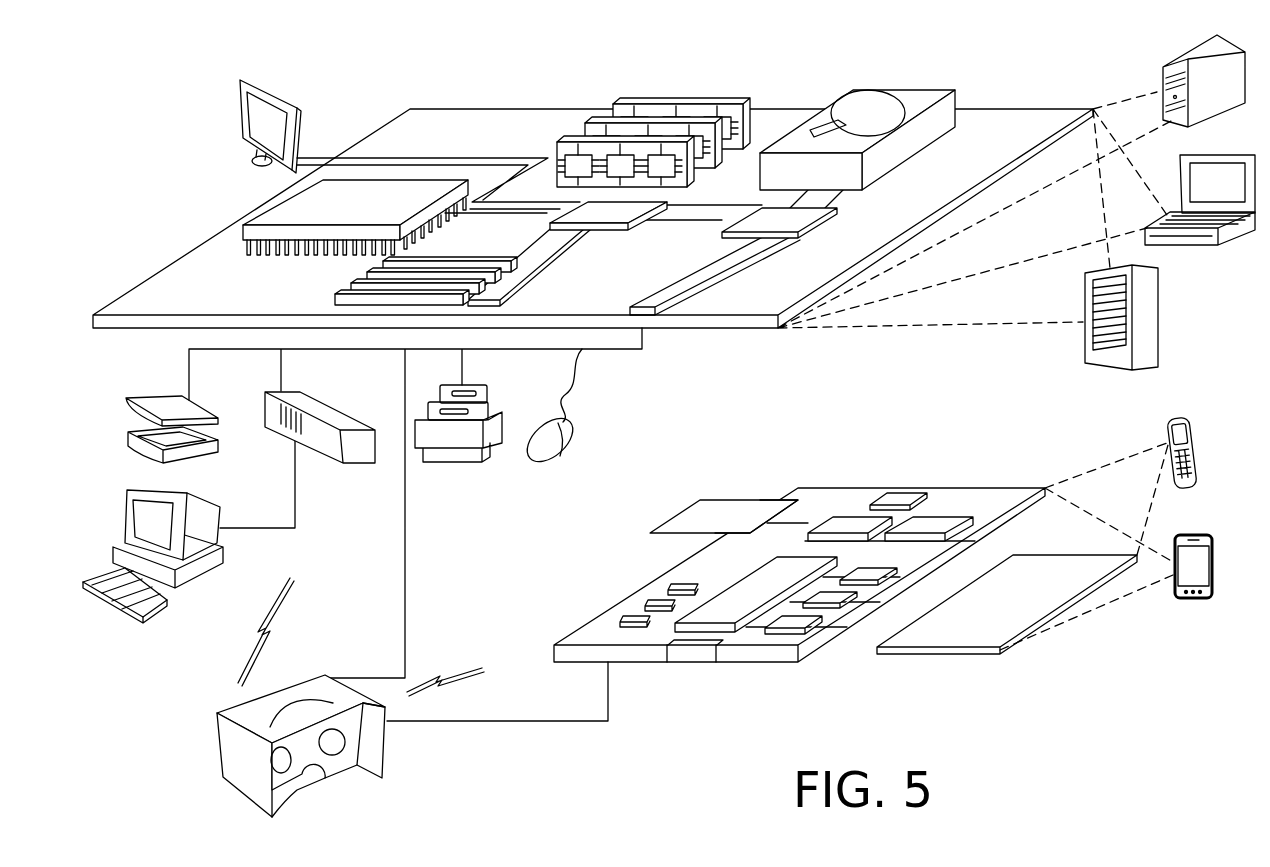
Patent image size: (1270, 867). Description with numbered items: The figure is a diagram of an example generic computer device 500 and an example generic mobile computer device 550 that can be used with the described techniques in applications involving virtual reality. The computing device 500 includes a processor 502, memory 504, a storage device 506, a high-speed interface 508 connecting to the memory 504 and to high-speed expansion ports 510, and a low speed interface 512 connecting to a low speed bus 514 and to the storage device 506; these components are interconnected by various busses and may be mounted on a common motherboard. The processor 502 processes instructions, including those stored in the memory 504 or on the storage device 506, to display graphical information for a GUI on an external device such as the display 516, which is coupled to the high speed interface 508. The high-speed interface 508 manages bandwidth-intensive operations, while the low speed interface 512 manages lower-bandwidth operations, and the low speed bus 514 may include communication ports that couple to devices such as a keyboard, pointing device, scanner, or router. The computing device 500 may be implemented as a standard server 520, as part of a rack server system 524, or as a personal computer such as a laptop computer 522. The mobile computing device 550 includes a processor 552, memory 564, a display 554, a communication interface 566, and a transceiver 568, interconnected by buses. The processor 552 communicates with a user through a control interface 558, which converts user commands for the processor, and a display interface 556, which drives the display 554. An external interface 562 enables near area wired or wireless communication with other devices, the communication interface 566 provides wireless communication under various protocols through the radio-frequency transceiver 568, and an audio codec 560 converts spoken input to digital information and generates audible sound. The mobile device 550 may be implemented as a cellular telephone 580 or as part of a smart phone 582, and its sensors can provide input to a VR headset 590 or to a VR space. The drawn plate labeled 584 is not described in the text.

The generic computer device 500 is at (364, 56).
The processor 502 is at (266, 207).
The memory 504 is at (683, 103).
The storage device 506 is at (896, 88).
The high-speed interface 508 is at (620, 213).
The high-speed expansion ports 510 is at (358, 277).
The low speed interface 512 is at (755, 213).
The low speed bus 514 is at (648, 305).
The display 516 is at (245, 80).
The standard server 520 is at (1178, 58).
The laptop computer 522 is at (1231, 153).
The rack server system 524 is at (1160, 317).
The generic mobile computer device 550 is at (1085, 659).
The processor 552 is at (727, 600).
The display 554 is at (1043, 570).
The display interface 556 is at (800, 622).
The control interface 558 is at (838, 598).
The audio codec 560 is at (873, 567).
The external interface 562 is at (692, 650).
The memory 564 is at (650, 605).
The communication interface 566 is at (852, 519).
The transceiver 568 is at (935, 519).
The cellular telephone 580 is at (899, 497).
The smart phone 582 is at (780, 500).
The display interface 584 is at (703, 500).
The VR headset 590 is at (406, 736).